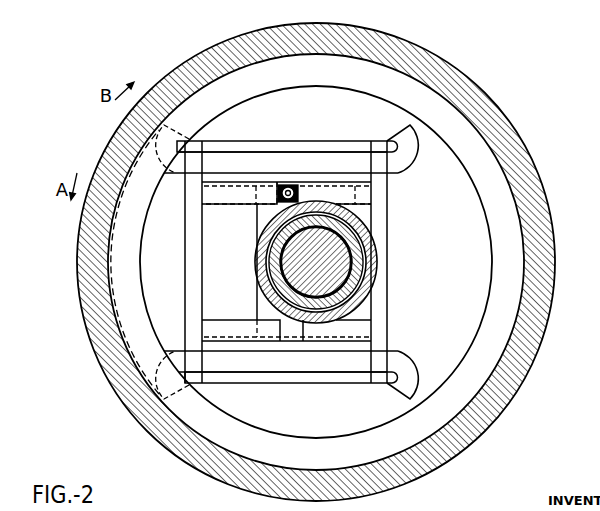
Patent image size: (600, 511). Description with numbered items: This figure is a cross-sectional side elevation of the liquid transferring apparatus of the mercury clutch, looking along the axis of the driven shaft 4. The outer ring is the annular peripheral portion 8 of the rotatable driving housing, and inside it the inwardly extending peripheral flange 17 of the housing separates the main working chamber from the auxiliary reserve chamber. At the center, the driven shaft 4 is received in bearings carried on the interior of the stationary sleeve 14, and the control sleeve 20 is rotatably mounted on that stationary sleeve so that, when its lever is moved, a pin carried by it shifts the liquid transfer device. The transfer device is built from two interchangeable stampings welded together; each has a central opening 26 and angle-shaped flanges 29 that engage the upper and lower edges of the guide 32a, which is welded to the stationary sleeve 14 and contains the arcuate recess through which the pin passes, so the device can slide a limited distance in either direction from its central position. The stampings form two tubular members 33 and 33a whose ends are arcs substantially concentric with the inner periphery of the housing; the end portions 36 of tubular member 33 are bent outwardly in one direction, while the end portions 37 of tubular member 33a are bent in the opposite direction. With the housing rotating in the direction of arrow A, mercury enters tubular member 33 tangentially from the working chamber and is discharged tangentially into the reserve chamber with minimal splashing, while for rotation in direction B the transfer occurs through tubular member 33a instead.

The driven shaft 4 is at (94, 404).
The annular peripheral portion 8 is at (548, 281).
The stationary sleeve 14 is at (368, 257).
The inwardly extending peripheral flange 17 is at (497, 282).
The sleeve 20 is at (262, 258).
The central opening 26 is at (371, 220).
The flanges 29 is at (246, 194).
The guide 32a is at (259, 291).
The tubular member 33 is at (297, 162).
The tubular member 33a is at (310, 366).
The end portions 36 is at (398, 128).
The end portions 37 is at (408, 391).